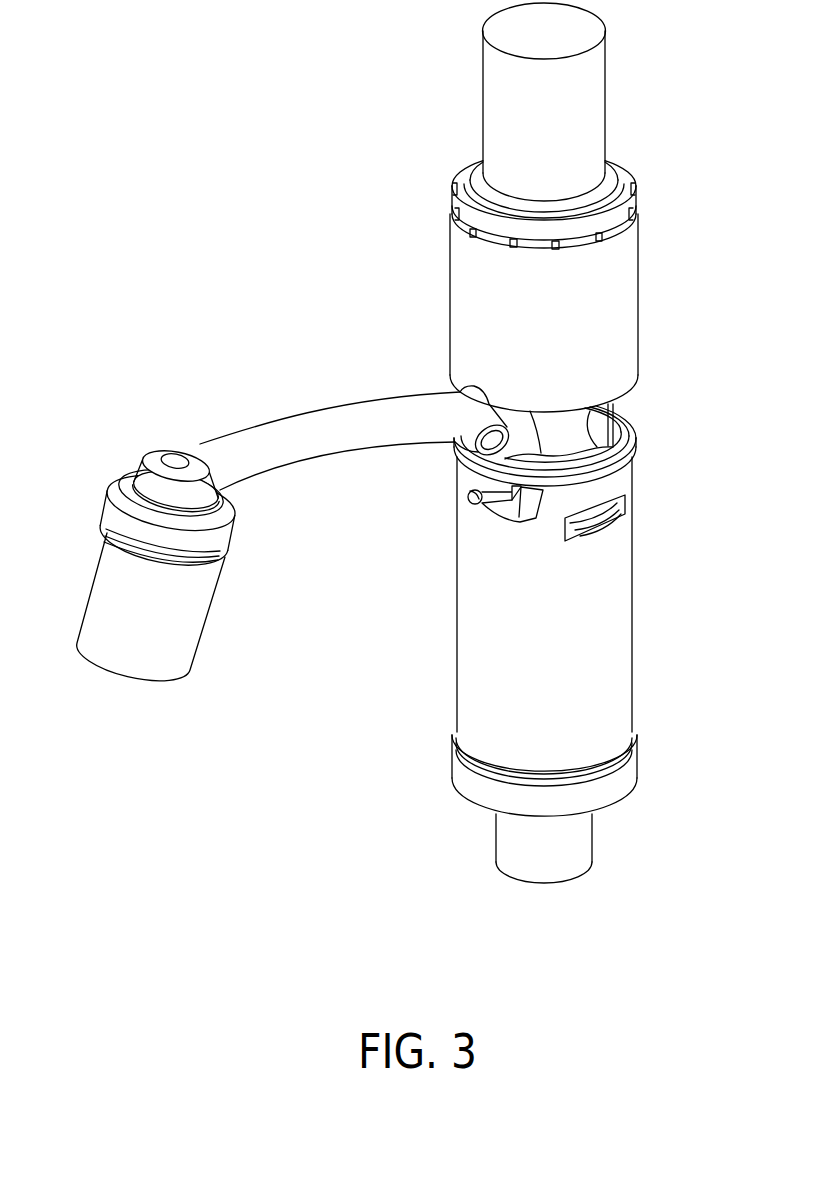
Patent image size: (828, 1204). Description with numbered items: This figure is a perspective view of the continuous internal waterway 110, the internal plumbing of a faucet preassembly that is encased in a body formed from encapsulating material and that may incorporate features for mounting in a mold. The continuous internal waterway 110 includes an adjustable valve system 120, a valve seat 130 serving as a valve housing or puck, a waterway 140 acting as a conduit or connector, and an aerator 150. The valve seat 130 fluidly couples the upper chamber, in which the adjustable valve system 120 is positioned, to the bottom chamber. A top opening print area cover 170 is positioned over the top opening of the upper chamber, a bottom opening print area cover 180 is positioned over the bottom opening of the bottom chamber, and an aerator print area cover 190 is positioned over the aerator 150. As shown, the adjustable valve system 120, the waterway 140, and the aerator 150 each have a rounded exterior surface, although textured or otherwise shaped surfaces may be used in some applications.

The continuous internal waterway 110 is at (341, 658).
The adjustable valve system 120 is at (628, 283).
The valve seat 130 is at (615, 422).
The waterway 140 is at (300, 410).
The aerator 150 is at (101, 511).
The top opening print area cover 170 is at (607, 89).
The bottom opening print area cover 180 is at (580, 842).
The aerator print area cover 190 is at (210, 638).